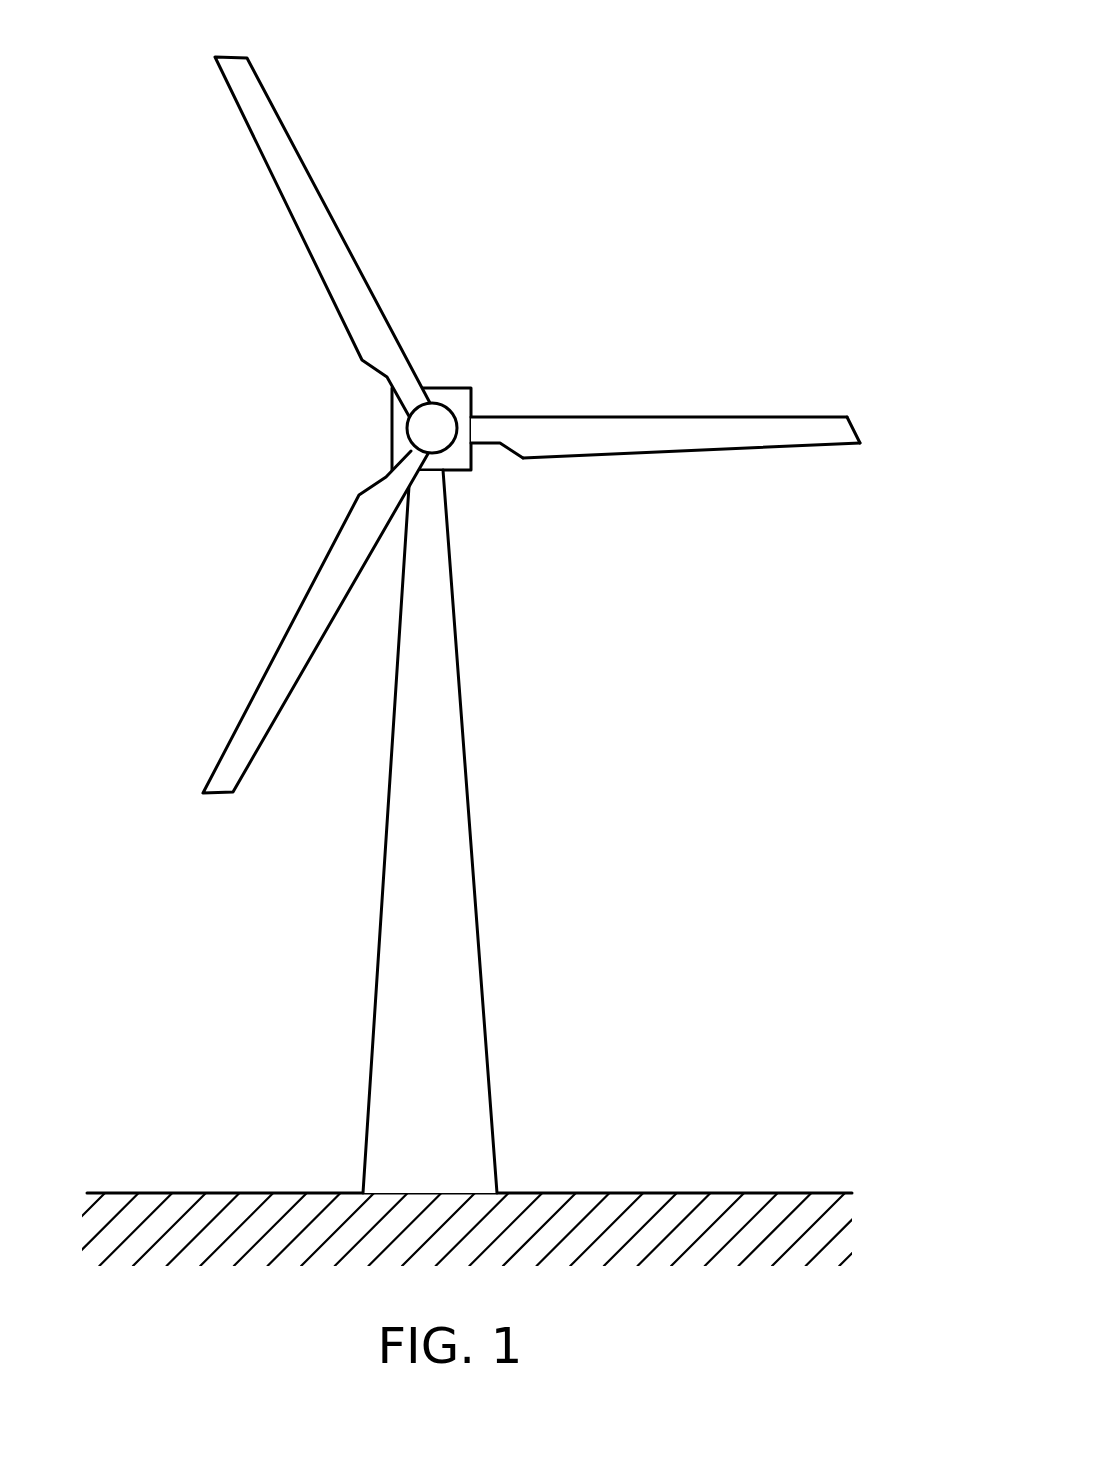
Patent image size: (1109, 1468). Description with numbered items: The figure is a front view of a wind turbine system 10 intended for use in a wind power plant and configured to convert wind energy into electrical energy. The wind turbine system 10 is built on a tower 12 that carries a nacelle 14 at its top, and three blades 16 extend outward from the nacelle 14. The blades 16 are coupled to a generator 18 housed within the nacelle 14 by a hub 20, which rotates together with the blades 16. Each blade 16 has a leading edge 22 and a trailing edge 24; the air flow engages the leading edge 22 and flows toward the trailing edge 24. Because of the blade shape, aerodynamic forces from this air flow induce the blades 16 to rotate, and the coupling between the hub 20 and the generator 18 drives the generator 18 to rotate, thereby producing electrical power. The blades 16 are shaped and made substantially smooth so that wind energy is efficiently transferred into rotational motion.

The wind turbine system 10 is at (608, 215).
The tower 12 is at (468, 802).
The nacelle 14 is at (443, 387).
The blades 16 is at (318, 242).
The generator 18 is at (452, 401).
The hub 20 is at (417, 430).
The leading edge 22 is at (697, 415).
The trailing edge 24 is at (713, 452).